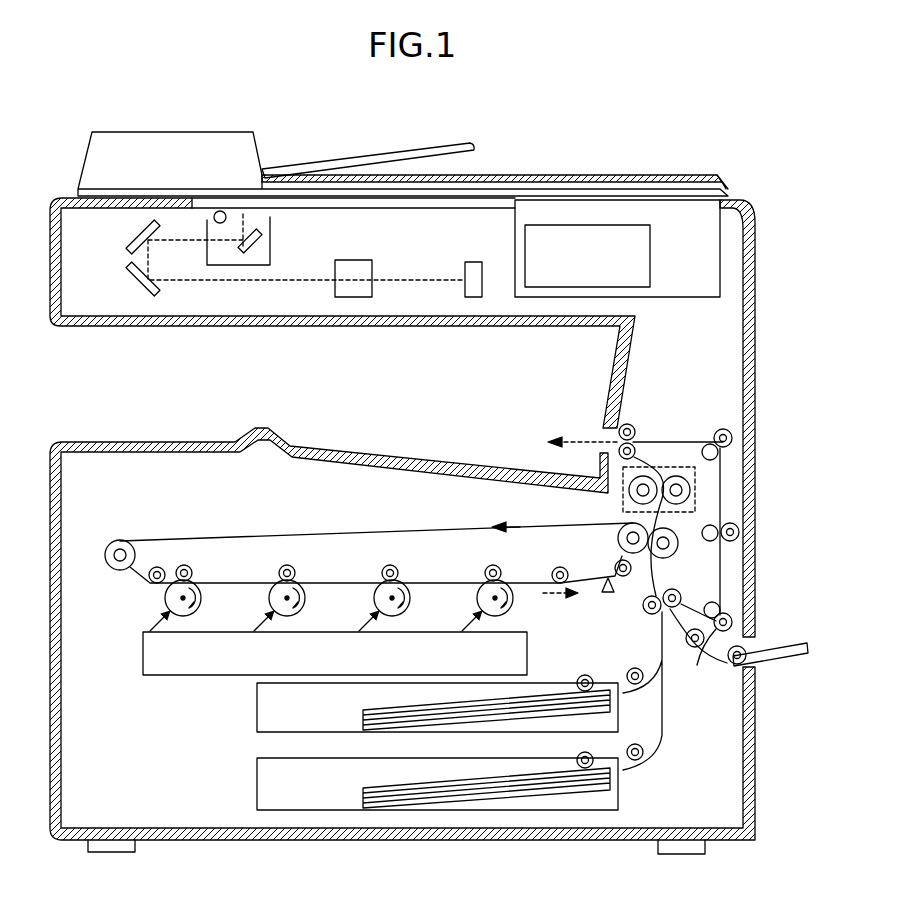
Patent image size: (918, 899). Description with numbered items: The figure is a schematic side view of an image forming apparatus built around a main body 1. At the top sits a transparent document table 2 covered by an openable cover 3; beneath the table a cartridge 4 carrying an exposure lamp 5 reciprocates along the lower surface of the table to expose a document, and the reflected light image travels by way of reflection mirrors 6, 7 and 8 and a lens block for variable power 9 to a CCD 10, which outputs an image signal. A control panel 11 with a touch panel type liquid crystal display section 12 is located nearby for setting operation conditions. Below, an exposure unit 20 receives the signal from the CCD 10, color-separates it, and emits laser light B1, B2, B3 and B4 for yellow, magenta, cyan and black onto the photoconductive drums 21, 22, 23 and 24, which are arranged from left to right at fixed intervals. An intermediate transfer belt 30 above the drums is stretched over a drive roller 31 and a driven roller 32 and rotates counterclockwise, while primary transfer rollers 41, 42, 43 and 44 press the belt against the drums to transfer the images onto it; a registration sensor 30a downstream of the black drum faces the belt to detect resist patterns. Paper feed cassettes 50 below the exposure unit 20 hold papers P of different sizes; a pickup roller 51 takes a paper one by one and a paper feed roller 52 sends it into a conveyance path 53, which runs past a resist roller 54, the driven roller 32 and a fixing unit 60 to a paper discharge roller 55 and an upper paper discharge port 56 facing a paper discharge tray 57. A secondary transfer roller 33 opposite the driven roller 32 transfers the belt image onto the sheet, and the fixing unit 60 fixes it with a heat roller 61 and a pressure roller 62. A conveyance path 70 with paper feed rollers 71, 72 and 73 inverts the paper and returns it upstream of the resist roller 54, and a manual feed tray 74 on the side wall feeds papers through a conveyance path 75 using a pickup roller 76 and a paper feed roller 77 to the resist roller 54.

The main body 1 is at (746, 232).
The document table 2 is at (403, 209).
The cover 3 is at (565, 175).
The cartridge 4 is at (272, 222).
The exposure lamp 5 is at (213, 218).
The reflection mirror 6 is at (260, 246).
The reflection mirror 7 is at (130, 237).
The reflection mirror 8 is at (132, 284).
The lens block for variable power 9 is at (353, 260).
The CCD 10 is at (473, 262).
The control panel 11 is at (694, 298).
The liquid crystal display section 12 is at (648, 296).
The exposure unit 20 is at (143, 655).
The photoconductive drum 21 is at (204, 601).
The photoconductive drum 22 is at (308, 601).
The photoconductive drum 23 is at (412, 601).
The photoconductive drum 24 is at (515, 603).
The intermediate transfer belt 30 is at (386, 533).
The registration sensor 30a is at (609, 595).
The drive roller 31 is at (110, 560).
The driven roller 32 is at (618, 542).
The secondary transfer roller 33 is at (672, 551).
The primary transfer roller 41 is at (192, 567).
The primary transfer roller 42 is at (279, 574).
The primary transfer roller 43 is at (382, 574).
The primary transfer roller 44 is at (485, 574).
The paper feed cassette 50 is at (257, 720).
The pickup roller 51 is at (585, 675).
The paper feed roller 52 is at (628, 670).
The conveyance path 53 is at (665, 638).
The resist roller 54 is at (655, 617).
The paper discharge roller 55 is at (632, 428).
The paper discharge port 56 is at (610, 438).
The paper discharge tray 57 is at (410, 446).
The fixing unit 60 is at (699, 490).
The heat roller 61 is at (628, 497).
The pressure roller 62 is at (699, 537).
The conveyance path 70 is at (678, 440).
The paper feed roller 71 is at (722, 428).
The paper feed roller 72 is at (755, 525).
The paper feed roller 73 is at (750, 615).
The manual feed tray 74 is at (772, 662).
The conveyance path 75 is at (695, 666).
The pickup roller 76 is at (748, 648).
The paper feed roller 77 is at (702, 650).
The laser light B1 is at (158, 622).
The laser light B2 is at (261, 622).
The laser light B3 is at (365, 622).
The laser light B4 is at (468, 622).
The paper P is at (393, 708).